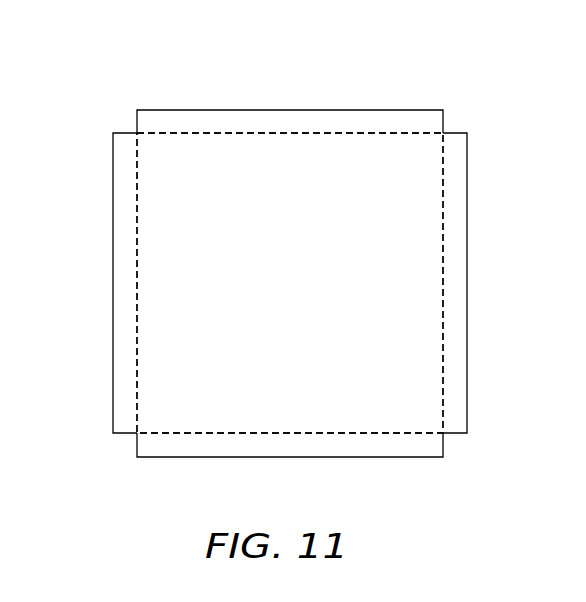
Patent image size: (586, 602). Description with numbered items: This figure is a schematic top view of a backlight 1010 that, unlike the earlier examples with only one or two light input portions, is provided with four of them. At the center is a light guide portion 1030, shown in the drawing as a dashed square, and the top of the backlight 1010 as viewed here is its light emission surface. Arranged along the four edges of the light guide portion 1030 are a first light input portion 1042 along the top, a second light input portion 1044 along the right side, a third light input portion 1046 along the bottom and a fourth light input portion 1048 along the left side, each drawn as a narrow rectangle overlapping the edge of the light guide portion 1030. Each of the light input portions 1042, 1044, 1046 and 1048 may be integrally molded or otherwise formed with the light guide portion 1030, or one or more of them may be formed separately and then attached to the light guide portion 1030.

The backlight 1010 is at (350, 65).
The light guide portion 1030 is at (333, 288).
The first light input portion 1042 is at (273, 110).
The second light input portion 1044 is at (467, 286).
The third light input portion 1046 is at (218, 458).
The fourth light input portion 1048 is at (113, 278).